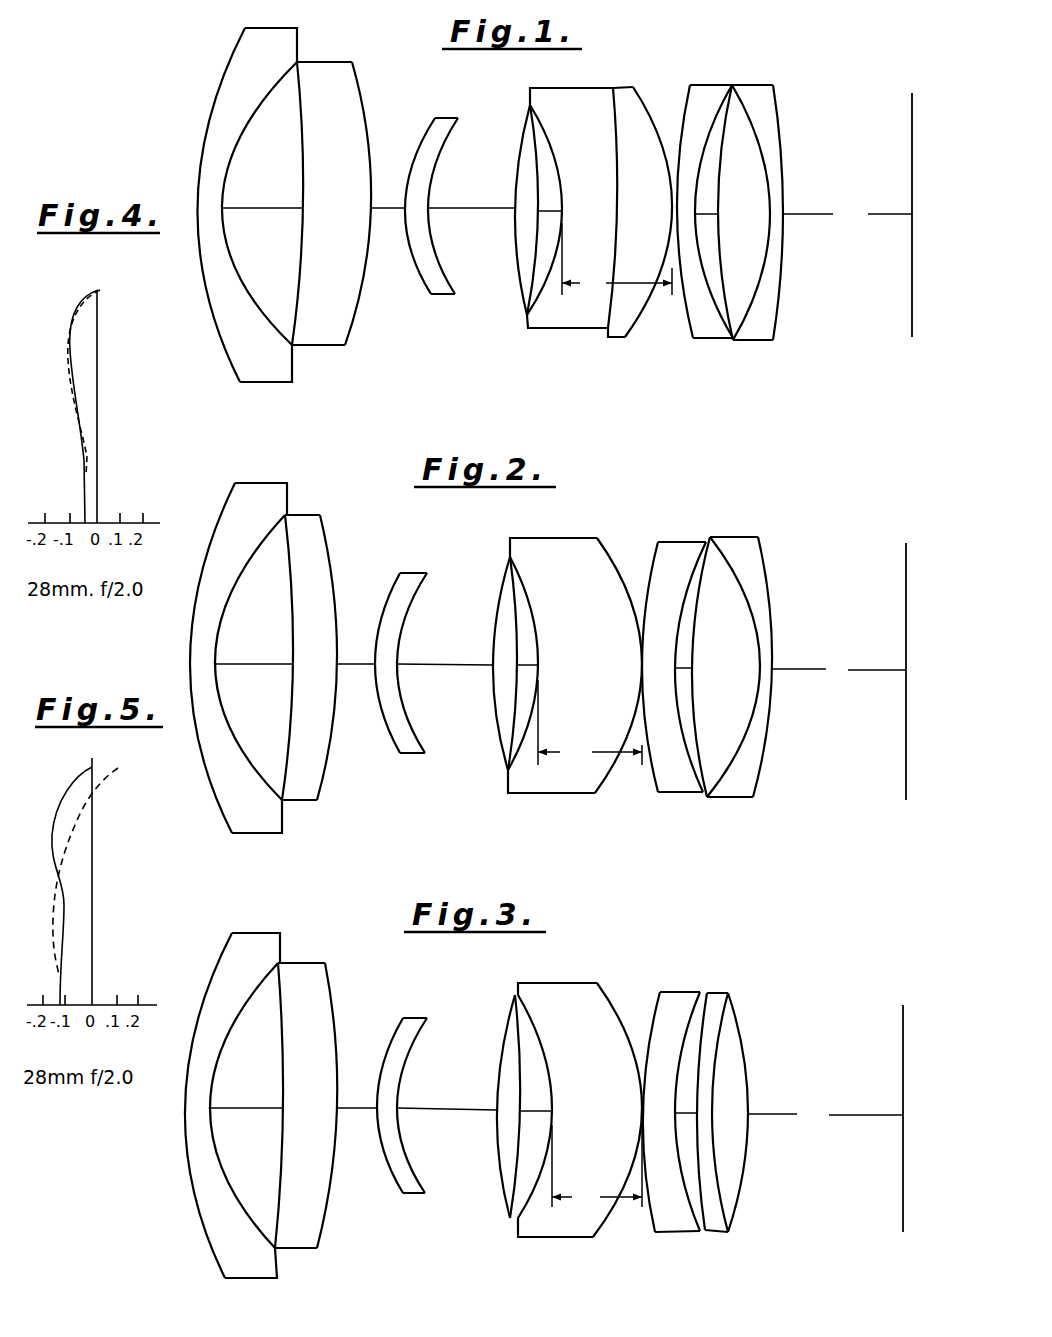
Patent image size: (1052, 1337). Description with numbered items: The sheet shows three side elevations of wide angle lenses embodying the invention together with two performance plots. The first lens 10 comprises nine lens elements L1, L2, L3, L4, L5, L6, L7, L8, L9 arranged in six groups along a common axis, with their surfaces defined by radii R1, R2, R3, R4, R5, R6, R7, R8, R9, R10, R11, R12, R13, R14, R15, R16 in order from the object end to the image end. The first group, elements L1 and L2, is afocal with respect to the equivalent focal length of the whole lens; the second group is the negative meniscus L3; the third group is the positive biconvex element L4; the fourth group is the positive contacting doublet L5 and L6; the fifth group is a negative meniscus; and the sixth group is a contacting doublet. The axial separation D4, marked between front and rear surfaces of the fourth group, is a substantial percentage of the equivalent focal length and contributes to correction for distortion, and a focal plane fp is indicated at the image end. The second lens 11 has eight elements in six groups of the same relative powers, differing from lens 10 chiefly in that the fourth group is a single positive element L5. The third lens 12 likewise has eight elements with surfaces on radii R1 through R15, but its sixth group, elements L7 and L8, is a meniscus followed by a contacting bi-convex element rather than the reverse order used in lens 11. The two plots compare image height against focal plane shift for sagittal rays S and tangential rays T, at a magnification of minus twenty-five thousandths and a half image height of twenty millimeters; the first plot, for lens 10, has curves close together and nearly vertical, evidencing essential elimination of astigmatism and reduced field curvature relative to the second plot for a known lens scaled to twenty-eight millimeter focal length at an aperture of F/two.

In FIG. 1, the first lens 10 is at (205, 102).
In FIG. 2, the second lens 11 is at (207, 528).
In FIG. 3, the another lens 12 is at (200, 970).
In FIG. 1, the lens element L1 is at (247, 218).
In FIG. 2, the lens element L1 is at (238, 664).
In FIG. 3, the lens element L1 is at (232, 1109).
In FIG. 1, the lens element L2 is at (329, 224).
In FIG. 2, the lens element L2 is at (306, 679).
In FIG. 3, the lens element L2 is at (301, 1126).
In FIG. 1, the meniscus L3 is at (435, 214).
In FIG. 2, the meniscus L3 is at (403, 676).
In FIG. 3, the meniscus L3 is at (400, 1125).
In FIG. 1, the biconvex element L4 is at (524, 189).
In FIG. 2, the biconvex element L4 is at (501, 648).
In FIG. 3, the biconvex element L4 is at (509, 1106).
In FIG. 1, the lens element L5 is at (557, 214).
In FIG. 2, the lens element L5 is at (548, 671).
In FIG. 3, the lens element L5 is at (543, 1118).
In FIG. 1, the lens element L6 is at (646, 220).
In FIG. 2, the lens element L6 is at (682, 666).
In FIG. 3, the lens element L6 is at (678, 1111).
In FIG. 1, the lens element L7 is at (723, 216).
In FIG. 2, the lens element L7 is at (755, 674).
In FIG. 3, the lens element L7 is at (748, 1118).
In FIG. 1, the lens element L8 is at (777, 226).
In FIG. 2, the lens element L8 is at (790, 670).
In FIG. 3, the lens element L8 is at (770, 1115).
In FIG. 1, the lens element L9 is at (794, 214).
In FIG. 1, the radius R1 is at (226, 72).
In FIG. 2, the radius R1 is at (227, 504).
In FIG. 3, the radius R1 is at (218, 952).
In FIG. 1, the radius R2 is at (243, 128).
In FIG. 2, the radius R2 is at (232, 592).
In FIG. 3, the radius R2 is at (223, 1034).
In FIG. 1, the radius R3 is at (305, 153).
In FIG. 2, the radius R3 is at (294, 615).
In FIG. 3, the radius R3 is at (284, 1056).
In FIG. 1, the radius R4 is at (362, 101).
In FIG. 2, the radius R4 is at (331, 553).
In FIG. 3, the radius R4 is at (335, 1006).
In FIG. 1, the radius R5 is at (426, 133).
In FIG. 2, the radius R5 is at (393, 588).
In FIG. 3, the radius R5 is at (397, 1034).
In FIG. 1, the radius R6 is at (433, 176).
In FIG. 2, the radius R6 is at (409, 618).
In FIG. 3, the radius R6 is at (420, 1051).
In FIG. 1, the radius R7 is at (523, 121).
In FIG. 2, the radius R7 is at (505, 578).
In FIG. 3, the radius R7 is at (505, 1021).
In FIG. 1, the radius R8 is at (543, 112).
In FIG. 2, the radius R8 is at (518, 590).
In FIG. 3, the radius R8 is at (523, 1030).
In FIG. 1, the radius R9 is at (553, 154).
In FIG. 2, the radius R9 is at (537, 638).
In FIG. 3, the radius R9 is at (550, 1083).
In FIG. 1, the radius R10 is at (613, 110).
In FIG. 2, the radius R10 is at (611, 553).
In FIG. 3, the radius R10 is at (613, 1001).
In FIG. 1, the radius R11 is at (650, 110).
In FIG. 2, the radius R11 is at (657, 560).
In FIG. 3, the radius R11 is at (657, 1007).
In FIG. 1, the radius R12 is at (682, 108).
In FIG. 2, the radius R12 is at (691, 552).
In FIG. 3, the radius R12 is at (691, 1017).
In FIG. 1, the radius R13 is at (736, 110).
In FIG. 2, the radius R13 is at (726, 557).
In FIG. 3, the radius R13 is at (720, 1000).
In FIG. 1, the radius R14 is at (722, 167).
In FIG. 2, the radius R14 is at (734, 576).
In FIG. 3, the radius R14 is at (723, 1034).
In FIG. 1, the radius R15 is at (757, 120).
In FIG. 2, the radius R15 is at (773, 625).
In FIG. 3, the radius R15 is at (745, 1060).
In FIG. 1, the radius R16 is at (784, 131).
In FIG. 1, the axial separation D4 is at (617, 259).
In FIG. 2, the axial separation D4 is at (590, 722).
In FIG. 3, the axial separation D4 is at (597, 1167).
In FIG. 1, the focal plane fp is at (912, 174).
In FIG. 2, the focal plane fp is at (906, 643).
In FIG. 3, the focal plane fp is at (903, 1070).
In FIG. 4, the sagittal rays S is at (87, 395).
In FIG. 5, the sagittal rays S is at (94, 865).
In FIG. 4, the tangential rays T is at (104, 290).
In FIG. 5, the tangential rays T is at (100, 758).